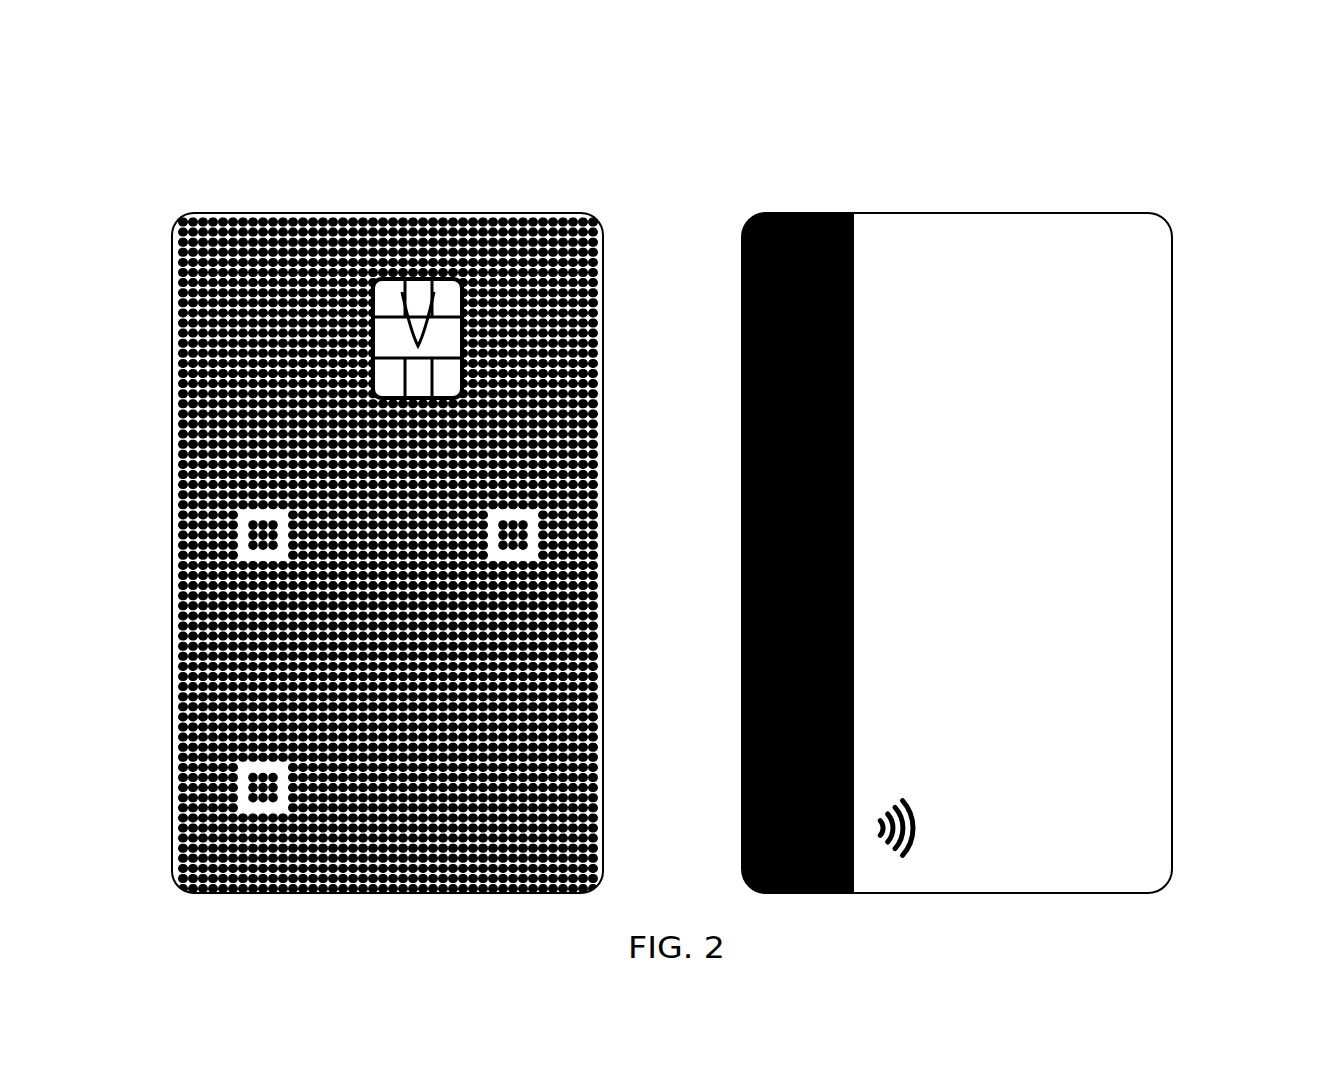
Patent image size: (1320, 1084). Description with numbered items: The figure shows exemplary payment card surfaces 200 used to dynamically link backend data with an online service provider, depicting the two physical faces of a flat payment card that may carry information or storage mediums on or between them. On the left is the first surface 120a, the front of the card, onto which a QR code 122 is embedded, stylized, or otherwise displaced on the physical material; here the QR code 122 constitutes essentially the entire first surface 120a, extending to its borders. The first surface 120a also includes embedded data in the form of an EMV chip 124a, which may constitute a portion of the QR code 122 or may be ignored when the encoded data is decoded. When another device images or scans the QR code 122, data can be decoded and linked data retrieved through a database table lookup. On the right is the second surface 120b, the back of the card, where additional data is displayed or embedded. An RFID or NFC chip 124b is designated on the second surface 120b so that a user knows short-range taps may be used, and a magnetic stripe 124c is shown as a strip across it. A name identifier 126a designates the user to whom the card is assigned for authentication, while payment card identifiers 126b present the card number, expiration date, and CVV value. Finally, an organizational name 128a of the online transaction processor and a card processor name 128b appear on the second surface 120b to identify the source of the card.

The payment card surfaces 200 is at (1183, 108).
The first surface 120a is at (366, 200).
The second surface 120b is at (1007, 190).
The QR code 122 is at (617, 217).
The EMV chip 124a is at (448, 279).
The RFID or NFC chip 124b is at (895, 858).
The magnetic stripe 124c is at (742, 792).
The name identifier 126a is at (1010, 328).
The payment card identifiers 126b is at (1150, 458).
The organizational name 128a is at (1053, 272).
The card processor name 128b is at (1150, 830).